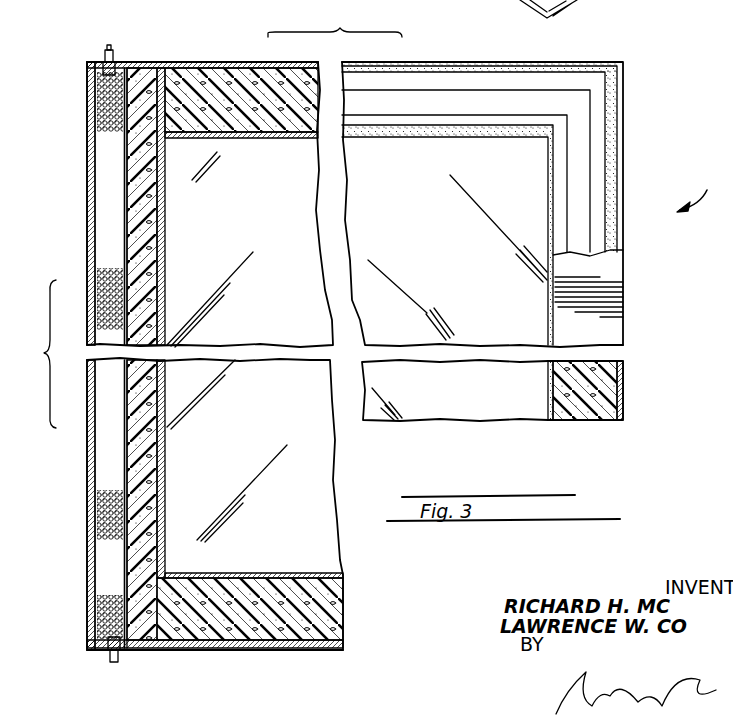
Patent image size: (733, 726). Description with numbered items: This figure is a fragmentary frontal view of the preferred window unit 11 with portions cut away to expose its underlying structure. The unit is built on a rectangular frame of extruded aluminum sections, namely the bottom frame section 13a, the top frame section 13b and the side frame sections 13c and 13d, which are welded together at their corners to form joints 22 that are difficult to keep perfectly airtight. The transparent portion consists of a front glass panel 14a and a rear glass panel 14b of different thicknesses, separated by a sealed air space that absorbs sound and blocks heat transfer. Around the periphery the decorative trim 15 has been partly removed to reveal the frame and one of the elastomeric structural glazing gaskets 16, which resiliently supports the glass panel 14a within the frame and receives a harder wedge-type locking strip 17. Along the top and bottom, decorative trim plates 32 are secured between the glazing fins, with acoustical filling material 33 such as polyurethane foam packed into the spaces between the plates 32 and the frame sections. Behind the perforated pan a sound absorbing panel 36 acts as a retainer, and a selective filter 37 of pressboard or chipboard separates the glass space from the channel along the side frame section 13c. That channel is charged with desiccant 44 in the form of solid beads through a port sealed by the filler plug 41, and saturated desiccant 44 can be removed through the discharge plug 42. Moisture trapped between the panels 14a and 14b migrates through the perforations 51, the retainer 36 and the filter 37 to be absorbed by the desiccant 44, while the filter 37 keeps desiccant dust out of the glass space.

The window unit 11 is at (705, 184).
The bottom frame section 13a is at (232, 652).
The top frame section 13b is at (155, 62).
The side frame section 13c is at (88, 233).
The side frame section 13d is at (623, 170).
The front glass panel 14a is at (451, 265).
The rear glass panel 14b is at (264, 301).
The decorative trim 15 is at (613, 273).
The structural glazing gasket 16 is at (598, 142).
The locking strip 17 is at (582, 115).
The welded joint 22 is at (100, 72).
The decorative trim plate 32 is at (300, 573).
The acoustical filling material 33 is at (224, 70).
The sound absorbing panel 36 is at (147, 470).
The selective filter 37 is at (128, 442).
The filler plug 41 is at (110, 52).
The discharge plug 42 is at (113, 662).
The desiccant 44 is at (100, 130).
The perforations 51 is at (163, 258).